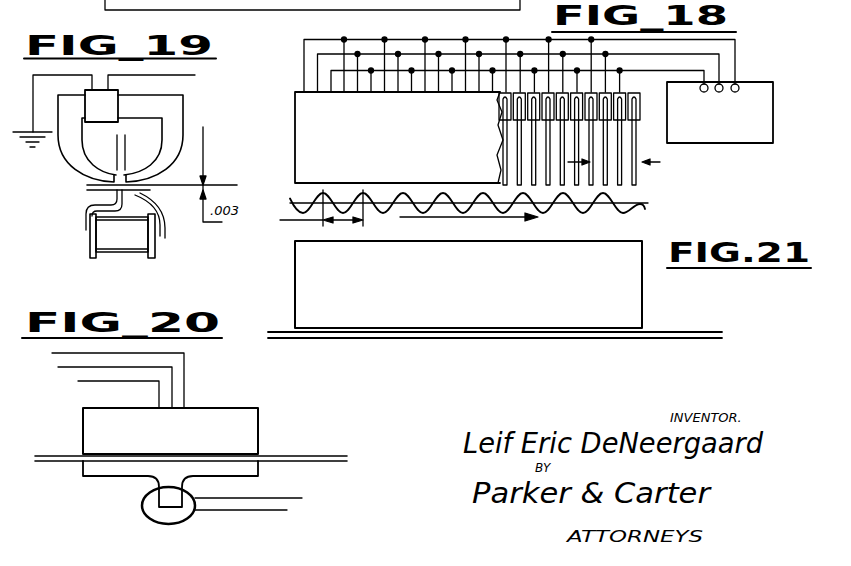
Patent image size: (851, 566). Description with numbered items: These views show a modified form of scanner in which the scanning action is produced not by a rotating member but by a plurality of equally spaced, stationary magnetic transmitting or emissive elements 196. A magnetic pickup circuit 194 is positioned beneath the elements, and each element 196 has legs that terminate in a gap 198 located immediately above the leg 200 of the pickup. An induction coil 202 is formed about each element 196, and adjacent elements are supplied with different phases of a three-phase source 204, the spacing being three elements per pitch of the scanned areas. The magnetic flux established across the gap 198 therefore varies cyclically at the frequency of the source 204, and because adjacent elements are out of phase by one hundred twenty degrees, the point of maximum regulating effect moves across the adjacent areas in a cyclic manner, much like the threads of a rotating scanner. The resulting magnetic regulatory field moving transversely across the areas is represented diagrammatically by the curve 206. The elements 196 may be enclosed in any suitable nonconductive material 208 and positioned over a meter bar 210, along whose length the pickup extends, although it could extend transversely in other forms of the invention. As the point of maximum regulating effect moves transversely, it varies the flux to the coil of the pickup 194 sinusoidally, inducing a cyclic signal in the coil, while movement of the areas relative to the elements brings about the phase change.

In FIG. 19, the magnetic pickup circuit 194 is at (152, 232).
In FIG. 19, the magnetic transmitting or emissive elements 196 is at (177, 127).
In FIG. 18, the magnetic transmitting or emissive elements 196 is at (637, 172).
In FIG. 20, the magnetic transmitting or emissive elements 196 is at (117, 472).
In FIG. 19, the gap 198 is at (125, 157).
In FIG. 19, the leg of the pickup 200 is at (117, 197).
In FIG. 19, the induction coil 202 is at (118, 107).
In FIG. 18, the three-phase source 204 is at (729, 135).
In FIG. 18, the curve 206 is at (627, 212).
In FIG. 18, the nonconductive material 208 is at (368, 144).
In FIG. 21, the nonconductive material 208 is at (425, 297).
In FIG. 20, the nonconductive material 208 is at (228, 423).
In FIG. 21, the meter bar 210 is at (645, 340).
In FIG. 20, the meter bar 210 is at (312, 457).